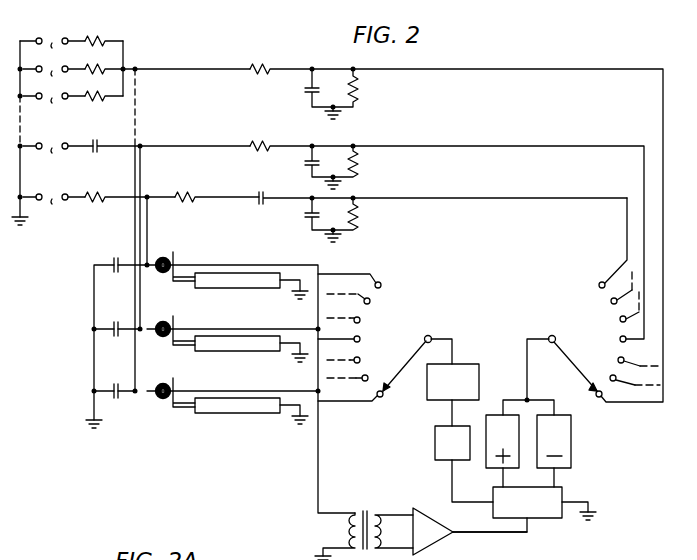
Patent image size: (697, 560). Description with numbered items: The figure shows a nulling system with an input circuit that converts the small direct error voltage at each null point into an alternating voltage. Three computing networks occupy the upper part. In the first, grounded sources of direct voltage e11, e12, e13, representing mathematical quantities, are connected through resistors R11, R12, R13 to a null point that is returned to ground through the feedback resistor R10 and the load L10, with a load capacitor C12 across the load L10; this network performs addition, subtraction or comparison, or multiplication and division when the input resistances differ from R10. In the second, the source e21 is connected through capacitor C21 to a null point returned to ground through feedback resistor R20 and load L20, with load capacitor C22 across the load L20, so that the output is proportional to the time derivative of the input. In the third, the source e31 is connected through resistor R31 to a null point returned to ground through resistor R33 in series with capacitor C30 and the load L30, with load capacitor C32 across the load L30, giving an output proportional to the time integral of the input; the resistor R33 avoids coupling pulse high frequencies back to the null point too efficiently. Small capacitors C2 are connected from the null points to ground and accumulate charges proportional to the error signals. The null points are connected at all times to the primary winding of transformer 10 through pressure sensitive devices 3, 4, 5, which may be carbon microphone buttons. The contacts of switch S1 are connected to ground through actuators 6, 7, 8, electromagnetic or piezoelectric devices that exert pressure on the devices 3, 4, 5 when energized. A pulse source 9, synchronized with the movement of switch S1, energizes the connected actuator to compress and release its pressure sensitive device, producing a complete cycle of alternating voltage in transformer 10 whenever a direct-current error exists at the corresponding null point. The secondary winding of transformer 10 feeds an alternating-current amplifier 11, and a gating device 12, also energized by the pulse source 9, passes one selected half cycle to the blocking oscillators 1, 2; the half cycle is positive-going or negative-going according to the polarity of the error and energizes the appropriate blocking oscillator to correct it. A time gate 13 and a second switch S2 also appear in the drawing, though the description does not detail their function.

The blocking oscillator 1 is at (487, 462).
The blocking oscillator 2 is at (573, 450).
The pressure sensitive device 3 is at (161, 273).
The pressure sensitive device 4 is at (162, 338).
The pressure sensitive device 5 is at (160, 400).
The actuator 6 is at (252, 289).
The actuator 7 is at (252, 352).
The actuator 8 is at (243, 414).
The pulse source 9 is at (478, 365).
The transformer 10 is at (365, 513).
The alternating-current amplifier 11 is at (433, 530).
The gating device 12 is at (552, 512).
The time gate 13 is at (435, 442).
The switch S1 is at (390, 355).
The selector switch S2 is at (590, 355).
The feedback resistor R10 is at (262, 63).
The resistor R11 is at (108, 42).
The resistor R12 is at (110, 66).
The resistor R13 is at (108, 93).
The feedback resistor R20 is at (262, 140).
The resistor R31 is at (90, 192).
The resistor R33 is at (186, 192).
The capacitor C2 is at (114, 258).
The load capacitor C12 is at (305, 91).
The capacitor C21 is at (106, 124).
The load capacitor C22 is at (305, 163).
The capacitor C30 is at (257, 196).
The load capacitor C32 is at (305, 214).
The load L10 is at (359, 90).
The load L20 is at (359, 162).
The load L30 is at (359, 213).
The source of direct voltage e11 is at (52, 34).
The source of direct voltage e12 is at (54, 61).
The source of direct voltage e13 is at (54, 104).
The source of direct voltage e21 is at (58, 154).
The source of direct voltage e31 is at (54, 205).